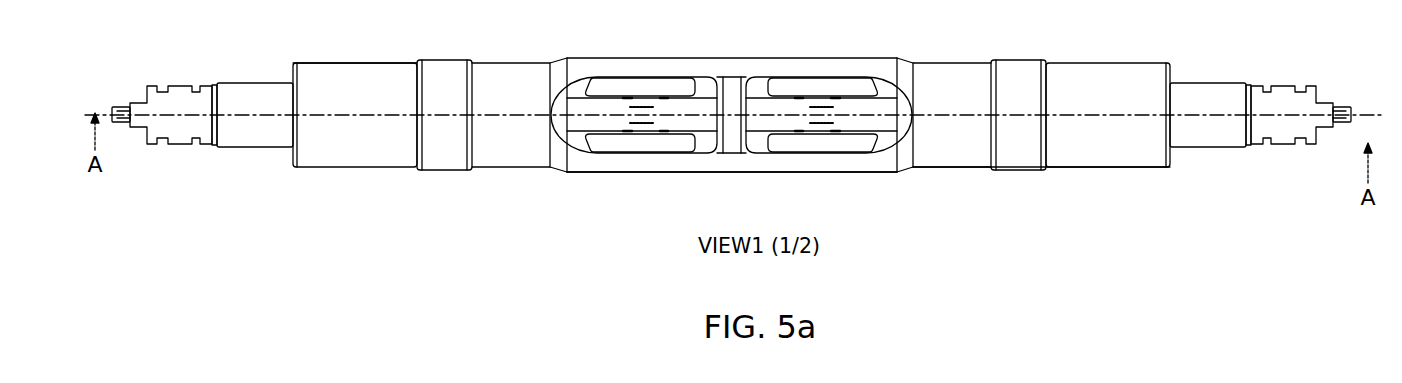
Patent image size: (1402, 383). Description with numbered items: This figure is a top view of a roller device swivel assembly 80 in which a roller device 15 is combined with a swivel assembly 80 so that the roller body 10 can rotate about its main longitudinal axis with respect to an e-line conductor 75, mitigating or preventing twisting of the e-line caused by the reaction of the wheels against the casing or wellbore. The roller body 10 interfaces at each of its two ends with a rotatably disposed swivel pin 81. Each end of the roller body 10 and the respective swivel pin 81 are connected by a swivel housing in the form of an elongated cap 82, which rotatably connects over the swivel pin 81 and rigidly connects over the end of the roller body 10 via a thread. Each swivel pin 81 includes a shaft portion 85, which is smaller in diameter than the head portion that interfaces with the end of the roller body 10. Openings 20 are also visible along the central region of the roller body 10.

The roller body 10 is at (608, 173).
The roller device 15 is at (922, 222).
The slots 20 is at (660, 152).
The e-line conductor 75 is at (1342, 123).
The swivel assembly 80 is at (1027, 222).
The swivel pin 81 is at (257, 148).
The elongated cap 82 is at (395, 168).
The shaft portion 85 is at (276, 148).